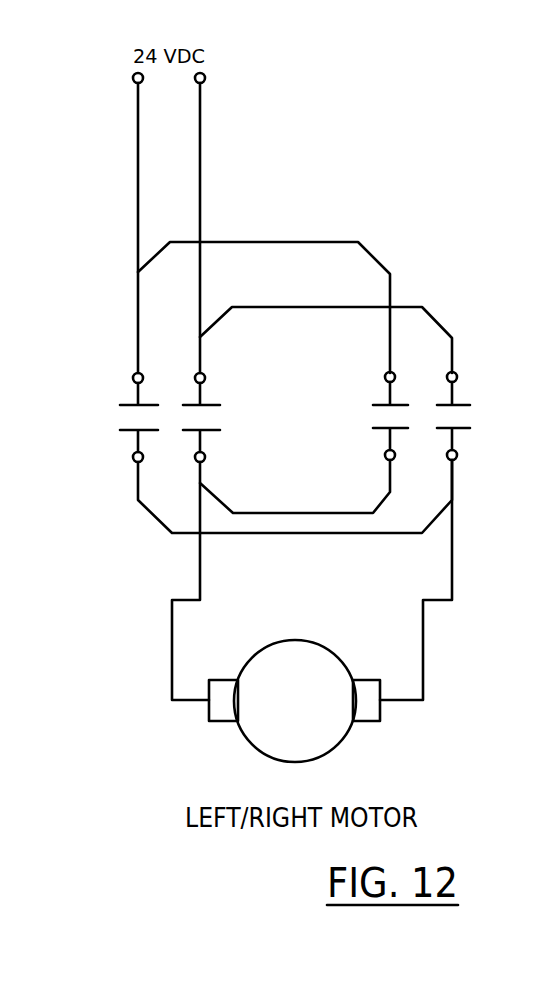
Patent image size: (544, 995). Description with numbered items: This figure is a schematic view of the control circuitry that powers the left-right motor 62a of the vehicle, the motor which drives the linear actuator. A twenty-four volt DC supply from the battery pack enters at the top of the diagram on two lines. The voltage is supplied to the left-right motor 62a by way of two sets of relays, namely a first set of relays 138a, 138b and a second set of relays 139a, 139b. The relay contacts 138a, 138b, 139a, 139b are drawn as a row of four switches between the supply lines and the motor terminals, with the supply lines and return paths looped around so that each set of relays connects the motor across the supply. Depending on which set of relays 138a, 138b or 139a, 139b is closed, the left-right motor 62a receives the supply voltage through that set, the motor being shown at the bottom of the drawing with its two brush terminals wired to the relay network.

The relay 138a is at (122, 404).
The relay 138b is at (212, 405).
The relay 139a is at (378, 404).
The relay 139b is at (465, 432).
The left-right motor 62a is at (335, 730).